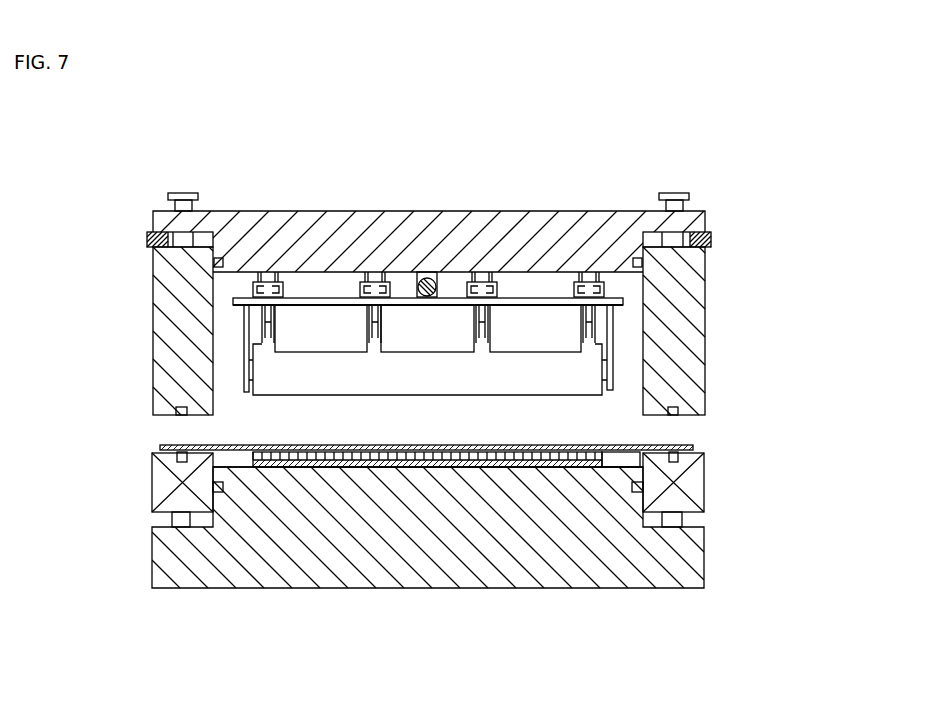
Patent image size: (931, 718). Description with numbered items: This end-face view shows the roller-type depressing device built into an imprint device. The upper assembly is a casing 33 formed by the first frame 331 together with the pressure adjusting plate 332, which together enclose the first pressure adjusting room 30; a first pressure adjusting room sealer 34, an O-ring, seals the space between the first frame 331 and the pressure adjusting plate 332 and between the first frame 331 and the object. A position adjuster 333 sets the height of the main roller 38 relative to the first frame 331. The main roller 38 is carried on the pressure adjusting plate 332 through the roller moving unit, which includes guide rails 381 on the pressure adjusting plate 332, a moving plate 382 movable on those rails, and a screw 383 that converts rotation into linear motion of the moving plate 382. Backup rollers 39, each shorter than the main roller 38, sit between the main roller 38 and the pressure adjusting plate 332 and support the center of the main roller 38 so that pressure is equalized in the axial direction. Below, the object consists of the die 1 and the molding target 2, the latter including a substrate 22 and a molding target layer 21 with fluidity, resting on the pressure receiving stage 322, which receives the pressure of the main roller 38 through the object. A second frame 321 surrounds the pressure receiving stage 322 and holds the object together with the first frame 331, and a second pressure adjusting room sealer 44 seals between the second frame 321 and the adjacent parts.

The die 1 is at (617, 468).
The molding target 2 is at (370, 470).
The molding target layer 21 is at (410, 468).
The substrate 22 is at (463, 468).
The first pressure adjusting room 30 is at (300, 280).
The casing 33 is at (628, 174).
The first frame 331 is at (178, 320).
The pressure adjusting plate 332 is at (231, 233).
The position adjuster 333 is at (147, 243).
The first pressure adjusting room sealer 34 is at (214, 263).
The main roller 38 is at (530, 373).
The guide rails 381 is at (376, 292).
The moving plate 382 is at (398, 298).
The screw 383 is at (430, 283).
The backup rollers 39 is at (340, 333).
The second pressure adjusting room sealer 44 is at (152, 454).
The second frame 321 is at (183, 497).
The pressure receiving stage 322 is at (273, 505).